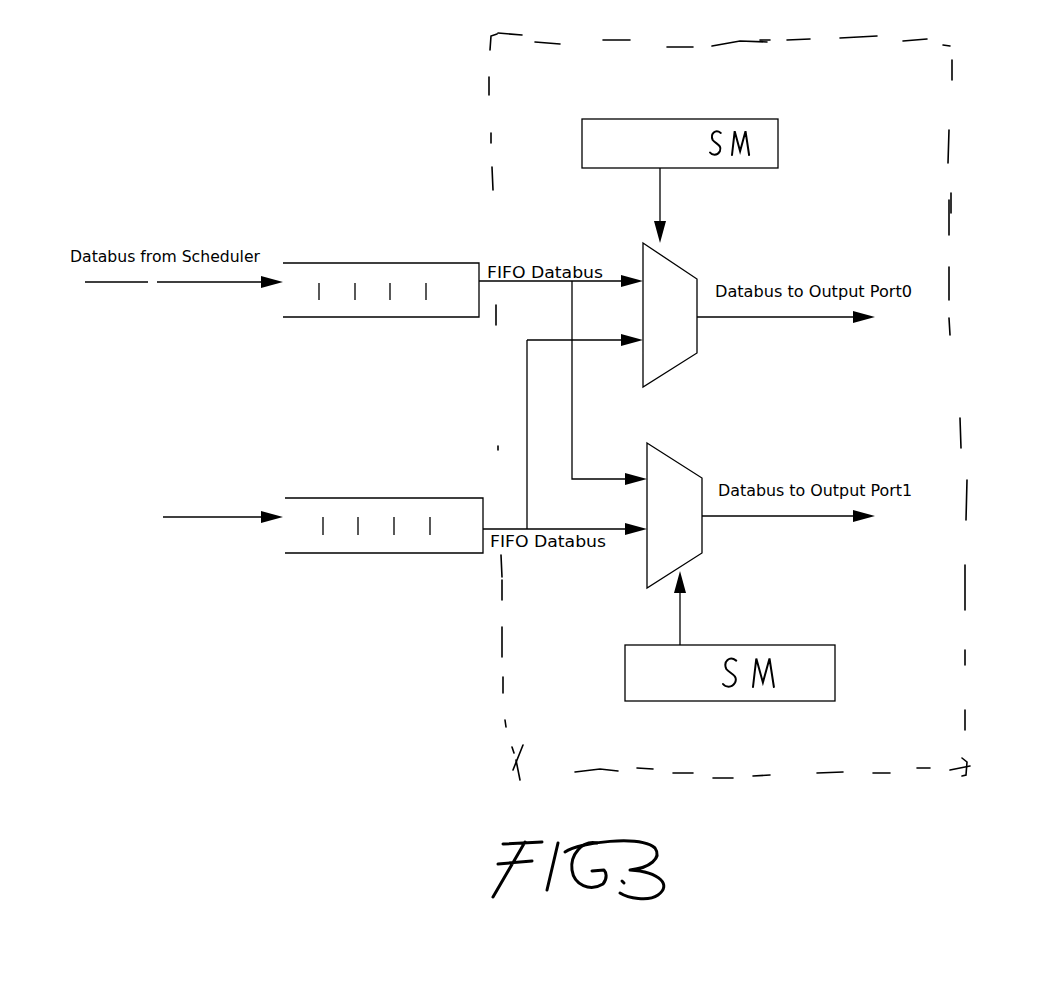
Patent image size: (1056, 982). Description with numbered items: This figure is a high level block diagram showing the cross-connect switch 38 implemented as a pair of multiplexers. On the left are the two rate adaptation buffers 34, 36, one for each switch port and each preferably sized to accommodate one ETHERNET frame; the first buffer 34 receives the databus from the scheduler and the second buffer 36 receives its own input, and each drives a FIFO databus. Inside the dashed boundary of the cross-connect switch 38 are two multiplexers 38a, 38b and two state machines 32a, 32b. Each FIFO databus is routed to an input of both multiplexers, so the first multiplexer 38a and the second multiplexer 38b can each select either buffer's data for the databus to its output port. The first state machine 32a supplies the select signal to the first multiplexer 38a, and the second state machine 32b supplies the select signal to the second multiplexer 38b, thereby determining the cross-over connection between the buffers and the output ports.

The state machine 32a is at (900, 135).
The state machine 32b is at (919, 670).
The rate adaptation buffer 34 is at (381, 376).
The rate adaptation buffer 36 is at (348, 552).
The cross-connect switch 38 is at (947, 189).
The multiplexer 38a is at (784, 399).
The multiplexer 38b is at (688, 477).